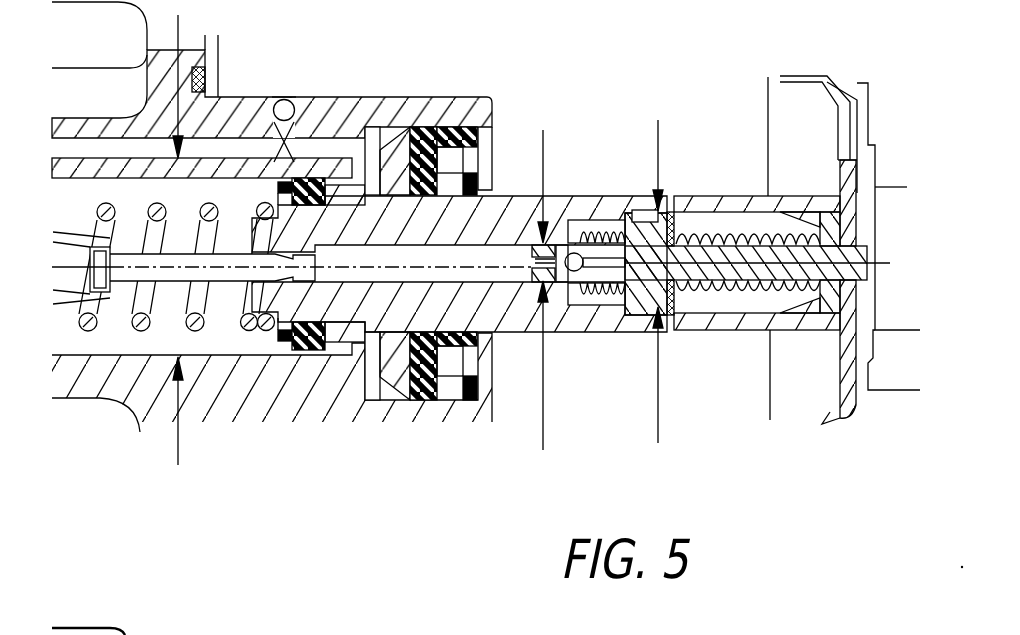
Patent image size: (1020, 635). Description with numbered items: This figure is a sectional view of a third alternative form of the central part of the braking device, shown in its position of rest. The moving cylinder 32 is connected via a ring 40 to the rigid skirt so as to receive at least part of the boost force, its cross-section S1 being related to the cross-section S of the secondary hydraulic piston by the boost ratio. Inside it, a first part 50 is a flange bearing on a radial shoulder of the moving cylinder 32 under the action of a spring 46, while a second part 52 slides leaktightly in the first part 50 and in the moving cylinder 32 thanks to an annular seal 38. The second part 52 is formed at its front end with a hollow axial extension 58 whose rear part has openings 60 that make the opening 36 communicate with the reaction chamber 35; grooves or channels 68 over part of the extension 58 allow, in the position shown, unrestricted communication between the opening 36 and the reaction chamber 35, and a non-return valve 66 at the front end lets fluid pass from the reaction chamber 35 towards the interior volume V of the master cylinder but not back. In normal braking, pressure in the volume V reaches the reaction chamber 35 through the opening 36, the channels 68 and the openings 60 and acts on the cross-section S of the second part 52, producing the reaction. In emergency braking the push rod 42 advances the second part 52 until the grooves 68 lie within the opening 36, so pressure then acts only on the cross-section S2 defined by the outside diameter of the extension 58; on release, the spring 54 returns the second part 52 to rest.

The moving cylinder 32 is at (515, 203).
The opening 36 is at (347, 280).
The grooves or channels 68 is at (549, 243).
The non-return valve 66 is at (563, 283).
The reaction chamber 35 is at (602, 305).
The spring 54 is at (592, 218).
The hollow axial extension 58 is at (615, 305).
The annular seal 38 is at (646, 205).
The openings 60 is at (630, 210).
The first part 50 is at (700, 225).
The second part 52 is at (733, 295).
The spring 46 is at (780, 193).
The ring 40 is at (835, 328).
The push rod 42 is at (900, 195).
The interior volume of the master cylinder V is at (220, 336).
The cross-section of the moving cylinder S1 is at (184, 436).
The cross-section of the second part S2 is at (544, 311).
The cross-section S is at (660, 303).